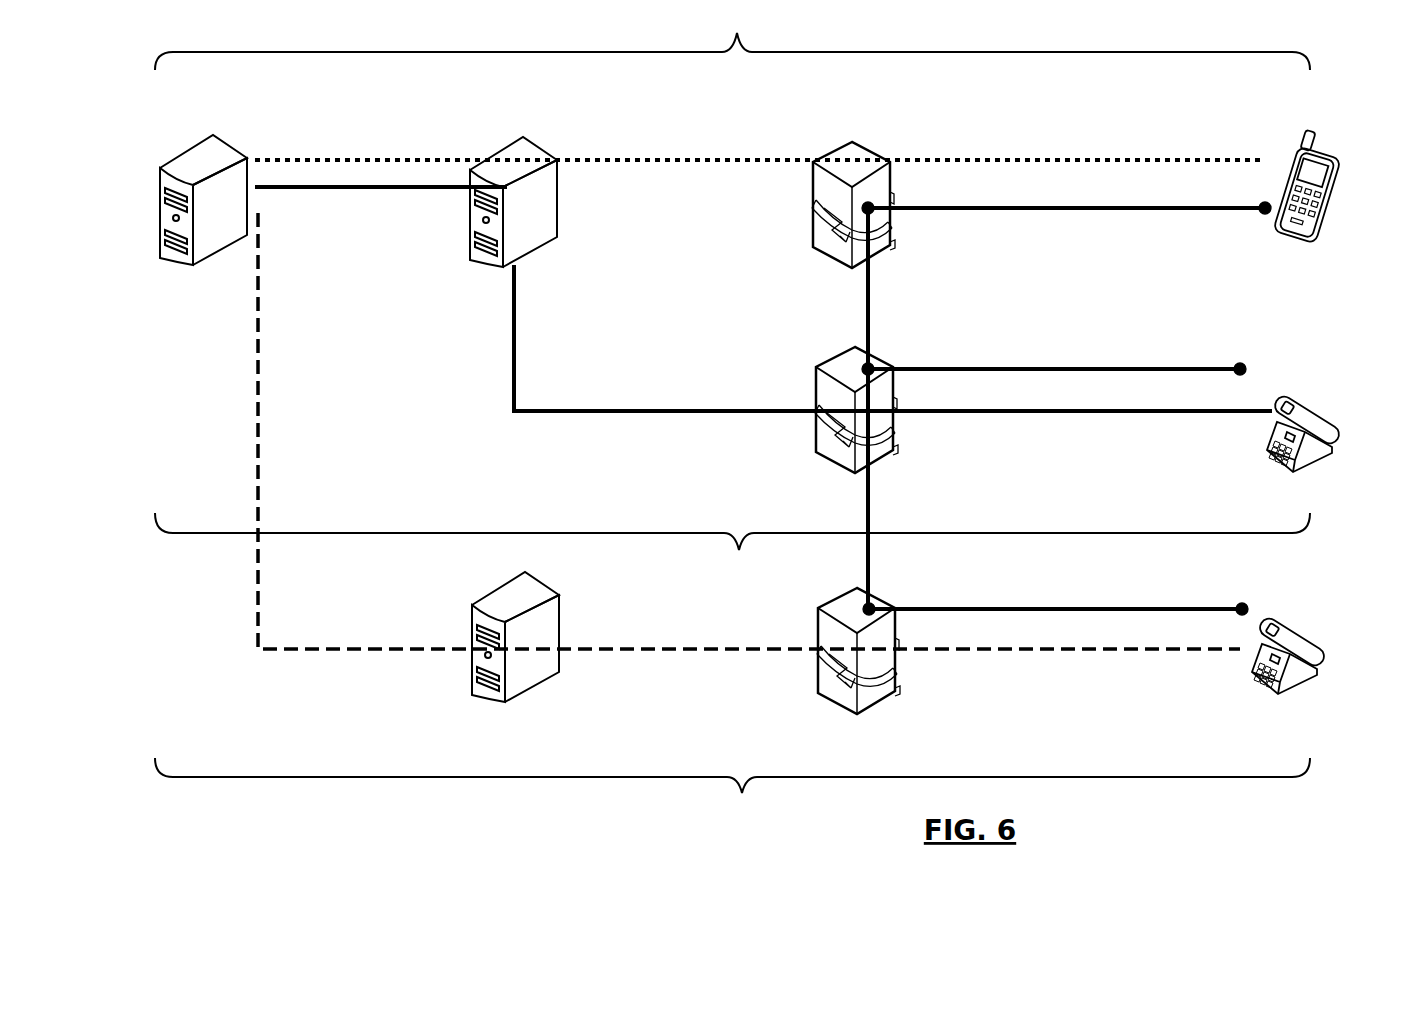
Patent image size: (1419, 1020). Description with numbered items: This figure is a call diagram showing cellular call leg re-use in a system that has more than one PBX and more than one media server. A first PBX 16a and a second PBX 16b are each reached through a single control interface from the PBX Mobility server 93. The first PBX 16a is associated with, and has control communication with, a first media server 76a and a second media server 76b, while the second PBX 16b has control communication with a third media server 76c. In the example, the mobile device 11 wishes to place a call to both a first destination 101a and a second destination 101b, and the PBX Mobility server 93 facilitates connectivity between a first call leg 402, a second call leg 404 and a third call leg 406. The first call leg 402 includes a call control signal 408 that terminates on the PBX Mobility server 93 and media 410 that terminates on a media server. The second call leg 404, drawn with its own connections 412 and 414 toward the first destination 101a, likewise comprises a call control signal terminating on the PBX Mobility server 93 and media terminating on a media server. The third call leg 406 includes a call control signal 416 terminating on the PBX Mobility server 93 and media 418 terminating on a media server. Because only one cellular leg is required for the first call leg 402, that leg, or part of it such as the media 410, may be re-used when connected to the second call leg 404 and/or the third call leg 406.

The call leg1 402 is at (732, 39).
The call leg2 404 is at (732, 548).
The call leg3 406 is at (732, 790).
The PBX Mobility server 93 is at (230, 143).
The PBX1 16a is at (523, 148).
The PBX2 16b is at (505, 592).
The call control signal 408 is at (693, 160).
The media 410 is at (1011, 210).
The media path between PBX 1 and destination 1 via media server 2 412 is at (656, 411).
The media path from media server 2 to destination 1 414 is at (1104, 368).
The call control signal 416 is at (672, 648).
The media 418 is at (1104, 609).
The Media Server1 76a is at (863, 152).
The Media Server2 76b is at (880, 356).
The Media Server3 76c is at (885, 596).
The mobile device 11 is at (1318, 152).
The destination1 101a is at (1316, 414).
The destination2 101b is at (1305, 640).